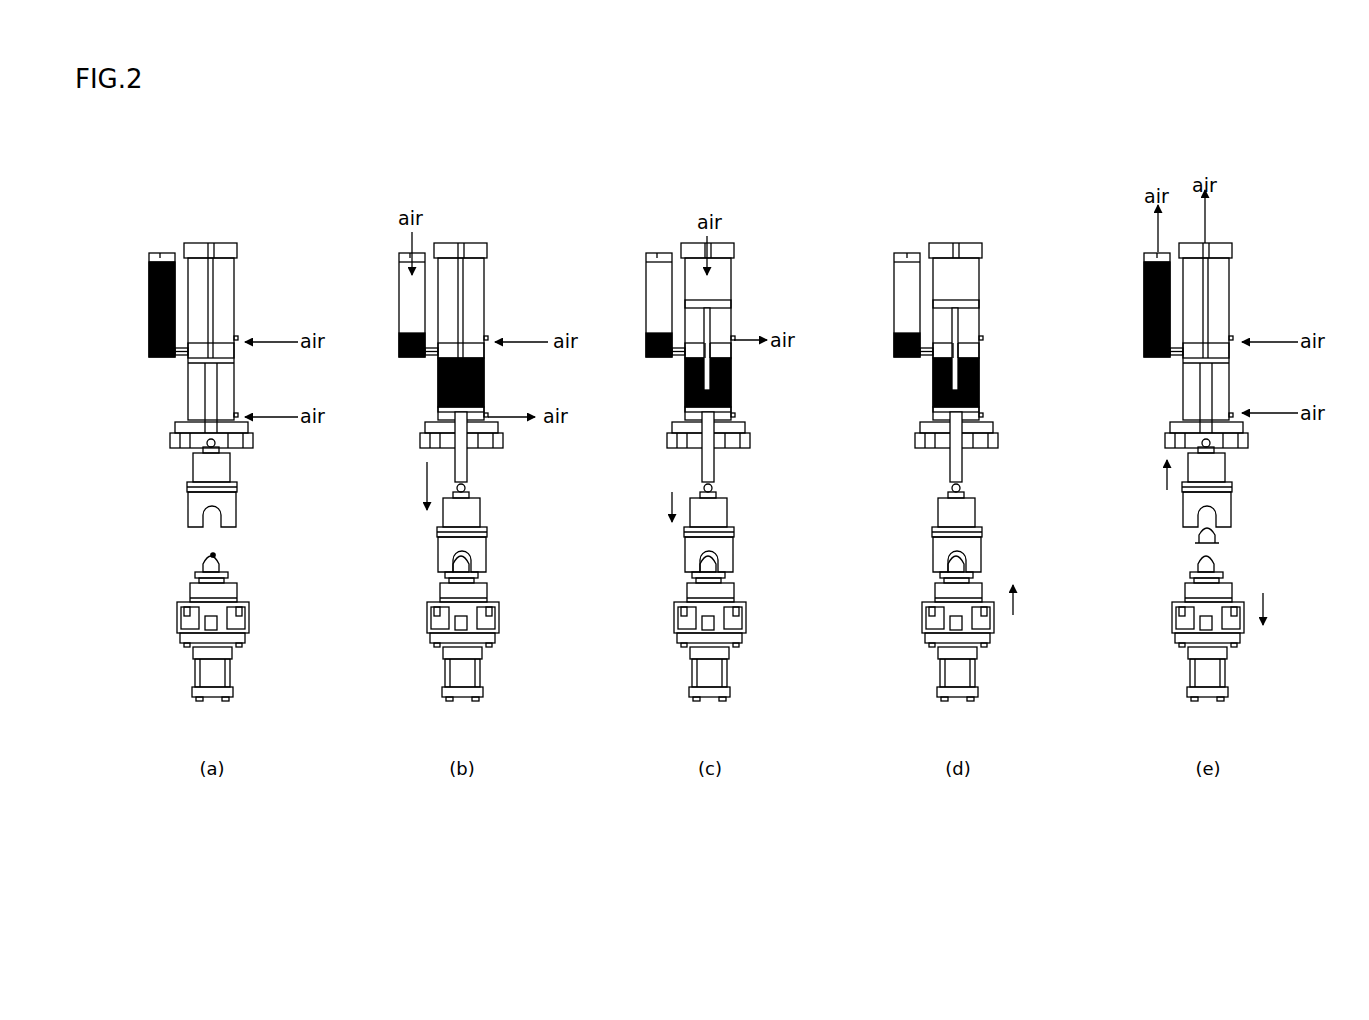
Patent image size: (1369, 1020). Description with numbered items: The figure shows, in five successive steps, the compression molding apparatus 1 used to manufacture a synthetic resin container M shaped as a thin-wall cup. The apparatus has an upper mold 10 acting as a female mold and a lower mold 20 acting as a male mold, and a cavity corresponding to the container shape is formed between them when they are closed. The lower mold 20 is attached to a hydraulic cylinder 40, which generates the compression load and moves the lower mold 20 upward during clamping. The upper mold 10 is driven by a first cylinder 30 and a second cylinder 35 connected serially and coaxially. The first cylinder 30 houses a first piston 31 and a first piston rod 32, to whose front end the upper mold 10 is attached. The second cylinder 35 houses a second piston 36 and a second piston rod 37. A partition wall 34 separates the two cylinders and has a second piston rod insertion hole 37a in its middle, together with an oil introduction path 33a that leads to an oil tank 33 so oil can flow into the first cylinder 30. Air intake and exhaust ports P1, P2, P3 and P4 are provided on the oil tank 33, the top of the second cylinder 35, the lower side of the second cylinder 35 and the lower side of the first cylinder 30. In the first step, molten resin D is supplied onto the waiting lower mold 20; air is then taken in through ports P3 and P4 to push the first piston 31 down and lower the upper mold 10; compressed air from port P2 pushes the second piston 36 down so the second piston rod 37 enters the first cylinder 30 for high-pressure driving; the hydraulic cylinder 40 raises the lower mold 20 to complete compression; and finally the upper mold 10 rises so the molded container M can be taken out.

The compression molding apparatus 1 is at (1268, 210).
The upper mold 10 is at (744, 505).
The lower mold 20 is at (739, 592).
The first cylinder 30 is at (708, 375).
The first piston 31 is at (742, 401).
The first piston rod 32 is at (651, 442).
The oil tank 33 is at (635, 305).
The oil introduction path 33a is at (634, 356).
The partition wall 34 is at (742, 363).
The second cylinder 35 is at (742, 328).
The second piston 36 is at (740, 270).
The second piston rod 37 is at (752, 300).
The second piston rod insertion hole 37a is at (648, 372).
The hydraulic cylinder 40 is at (664, 674).
The air intake and exhaust port P1 is at (671, 229).
The air intake and exhaust port P2 is at (719, 221).
The air intake and exhaust port P3 is at (763, 324).
The air intake and exhaust port P4 is at (763, 415).
The molten resin D is at (210, 556).
The container M is at (1195, 535).